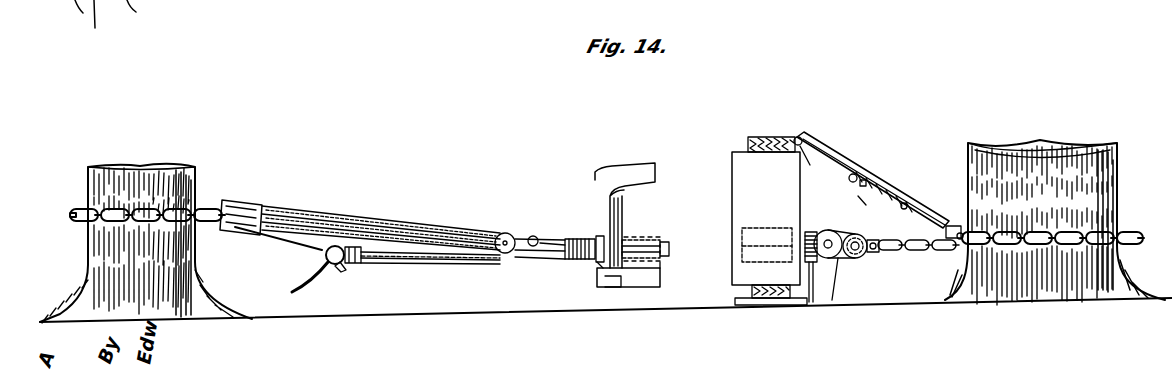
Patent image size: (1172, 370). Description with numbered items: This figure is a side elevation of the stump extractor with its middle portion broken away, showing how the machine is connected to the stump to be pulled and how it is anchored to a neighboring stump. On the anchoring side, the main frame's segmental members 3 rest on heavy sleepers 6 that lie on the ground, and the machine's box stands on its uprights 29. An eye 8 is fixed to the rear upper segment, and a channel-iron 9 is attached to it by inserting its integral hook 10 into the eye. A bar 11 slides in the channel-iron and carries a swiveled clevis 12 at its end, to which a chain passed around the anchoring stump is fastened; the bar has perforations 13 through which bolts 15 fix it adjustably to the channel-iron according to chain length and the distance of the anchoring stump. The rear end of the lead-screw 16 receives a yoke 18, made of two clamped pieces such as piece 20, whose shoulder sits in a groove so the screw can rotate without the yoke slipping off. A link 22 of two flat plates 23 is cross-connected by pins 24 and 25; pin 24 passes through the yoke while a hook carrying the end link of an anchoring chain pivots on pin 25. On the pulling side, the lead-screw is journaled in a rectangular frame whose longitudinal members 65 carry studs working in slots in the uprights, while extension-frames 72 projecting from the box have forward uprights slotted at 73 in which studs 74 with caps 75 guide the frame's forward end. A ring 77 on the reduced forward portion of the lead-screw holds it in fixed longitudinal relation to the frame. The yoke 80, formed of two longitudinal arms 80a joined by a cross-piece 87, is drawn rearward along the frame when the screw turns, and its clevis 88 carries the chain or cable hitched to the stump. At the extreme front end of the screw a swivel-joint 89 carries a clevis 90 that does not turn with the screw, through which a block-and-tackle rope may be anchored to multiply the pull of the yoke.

The segmental member 3 is at (750, 140).
The sleeper 6 is at (768, 304).
The eye 8 is at (809, 166).
The channel-iron 9 is at (838, 160).
The hook 10 is at (808, 131).
The bar 11 is at (912, 216).
The swiveled clevis 12 is at (952, 227).
The perforation 13 is at (882, 198).
The bolt 15 is at (904, 204).
The lead-screw 16 is at (668, 256).
The yoke 18 is at (830, 231).
The yoke piece 20 is at (816, 267).
The link 22 is at (834, 262).
The flat plate 23 is at (852, 258).
The pin 24 is at (826, 240).
The pin 25 is at (870, 252).
The upright 29 is at (766, 218).
The longitudinal member 65 is at (640, 248).
The extension-frame 72 is at (630, 175).
The slot 73 is at (618, 208).
The stud 74 is at (602, 264).
The cap 75 is at (618, 264).
The ring 77 is at (599, 240).
The yoke 80 is at (356, 260).
The longitudinal arm 80a is at (448, 260).
The cross-piece 87 is at (341, 270).
The clevis 88 is at (326, 258).
The swivel-joint 89 is at (582, 240).
The clevis 90 is at (535, 240).